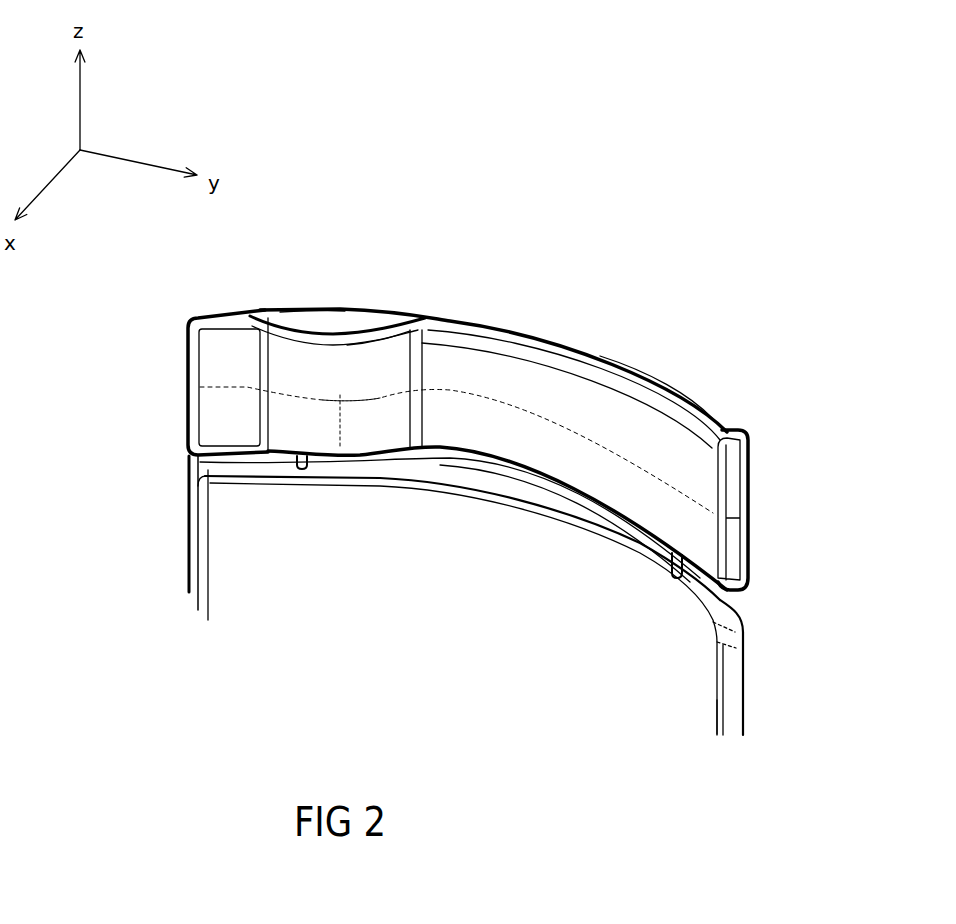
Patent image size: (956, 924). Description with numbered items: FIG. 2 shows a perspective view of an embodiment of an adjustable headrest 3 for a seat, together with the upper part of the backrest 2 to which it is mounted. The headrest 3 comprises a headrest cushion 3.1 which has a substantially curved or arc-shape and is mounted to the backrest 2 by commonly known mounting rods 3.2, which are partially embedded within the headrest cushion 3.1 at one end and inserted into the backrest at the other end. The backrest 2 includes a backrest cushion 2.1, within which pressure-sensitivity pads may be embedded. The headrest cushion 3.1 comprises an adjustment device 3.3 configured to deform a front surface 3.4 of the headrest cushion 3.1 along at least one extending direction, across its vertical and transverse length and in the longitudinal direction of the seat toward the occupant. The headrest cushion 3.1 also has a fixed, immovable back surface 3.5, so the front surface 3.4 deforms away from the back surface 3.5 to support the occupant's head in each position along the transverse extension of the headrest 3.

The backrest 2 is at (766, 653).
The backrest cushion 2.1 is at (688, 686).
The headrest 3 is at (618, 316).
The headrest cushion 3.1 is at (685, 394).
The mounting rods 3.2 is at (300, 460).
The adjustment device 3.3 is at (307, 318).
The front surface 3.4 is at (380, 400).
The back surface 3.5 is at (387, 315).